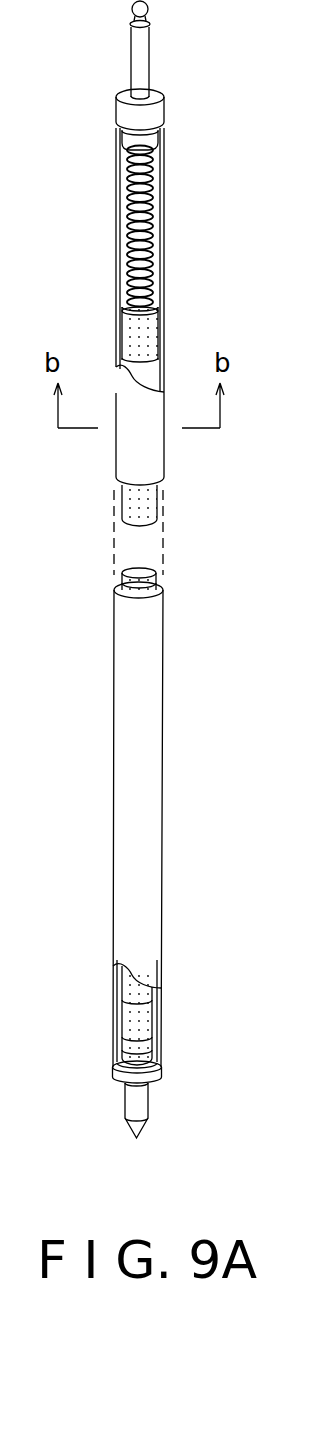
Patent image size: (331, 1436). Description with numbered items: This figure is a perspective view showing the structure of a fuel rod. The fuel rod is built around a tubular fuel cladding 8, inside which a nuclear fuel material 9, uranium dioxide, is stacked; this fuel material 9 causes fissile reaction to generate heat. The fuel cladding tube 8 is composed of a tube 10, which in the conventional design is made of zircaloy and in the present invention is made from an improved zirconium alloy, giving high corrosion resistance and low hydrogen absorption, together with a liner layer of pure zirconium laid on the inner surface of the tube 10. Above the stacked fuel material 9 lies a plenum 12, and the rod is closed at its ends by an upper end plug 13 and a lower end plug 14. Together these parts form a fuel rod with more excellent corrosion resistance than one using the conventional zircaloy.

The fuel cladding tube 8 is at (140, 752).
The nuclear fuel material 9 is at (150, 511).
The tube 10 is at (117, 202).
The plenum 12 is at (152, 227).
The upper end plug 13 is at (170, 111).
The lower end plug 14 is at (138, 1105).